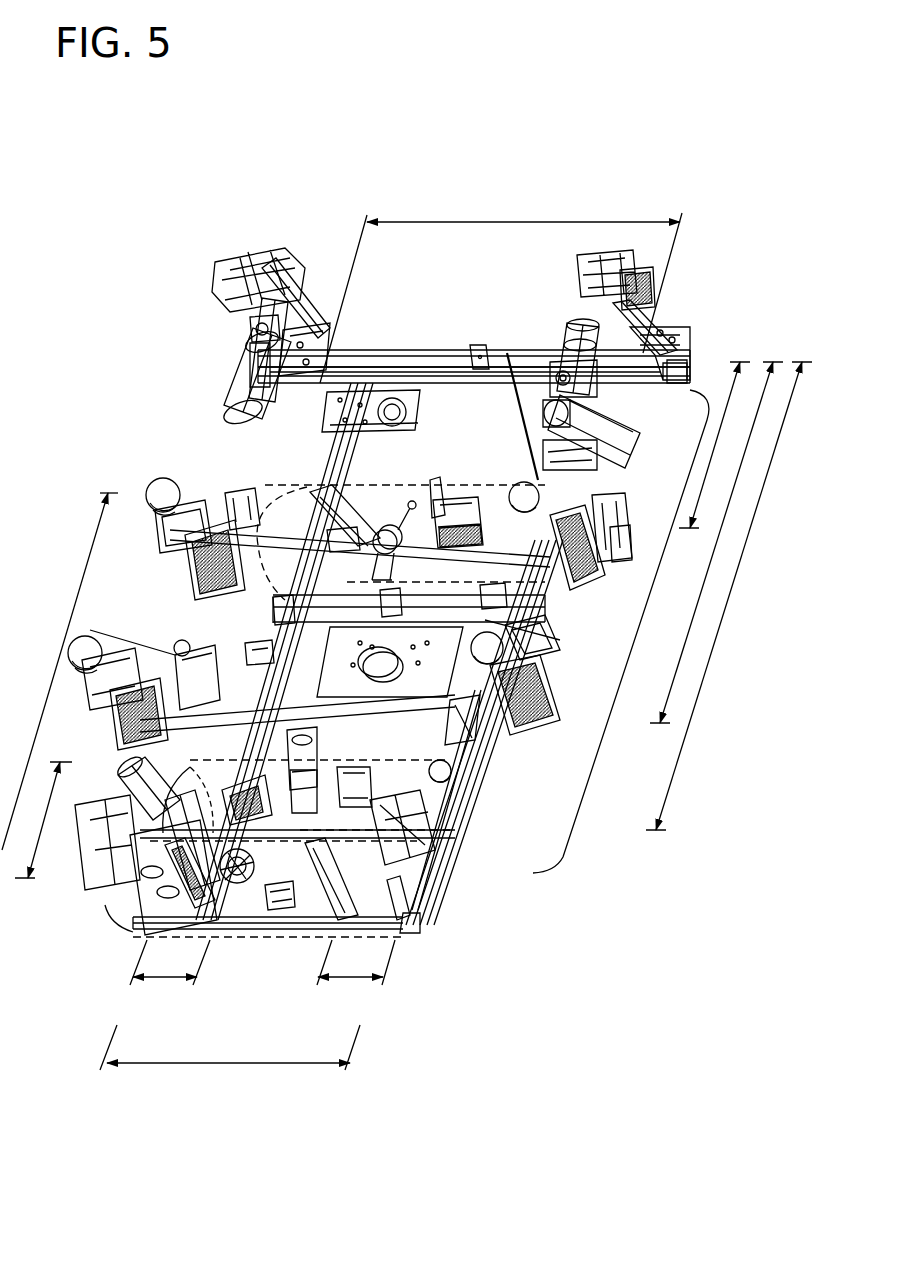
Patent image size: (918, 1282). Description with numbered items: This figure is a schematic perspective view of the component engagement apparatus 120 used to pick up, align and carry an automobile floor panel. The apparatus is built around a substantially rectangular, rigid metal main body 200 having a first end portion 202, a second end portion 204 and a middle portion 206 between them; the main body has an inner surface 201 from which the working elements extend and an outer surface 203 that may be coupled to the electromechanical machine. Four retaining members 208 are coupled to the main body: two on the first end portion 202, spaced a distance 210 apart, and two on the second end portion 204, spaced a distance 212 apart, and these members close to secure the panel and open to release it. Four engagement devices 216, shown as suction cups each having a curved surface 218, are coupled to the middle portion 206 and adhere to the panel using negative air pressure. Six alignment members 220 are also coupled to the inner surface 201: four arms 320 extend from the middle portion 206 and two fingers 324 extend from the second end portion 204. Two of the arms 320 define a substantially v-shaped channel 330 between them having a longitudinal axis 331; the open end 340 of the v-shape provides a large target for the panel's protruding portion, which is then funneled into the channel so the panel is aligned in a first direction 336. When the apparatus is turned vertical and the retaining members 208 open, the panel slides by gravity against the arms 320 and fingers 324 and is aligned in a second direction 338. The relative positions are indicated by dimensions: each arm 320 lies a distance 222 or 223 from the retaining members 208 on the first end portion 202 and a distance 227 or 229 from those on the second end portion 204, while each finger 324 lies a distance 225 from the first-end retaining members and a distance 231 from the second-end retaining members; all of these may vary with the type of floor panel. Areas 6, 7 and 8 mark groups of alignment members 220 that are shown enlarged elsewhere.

The component engagement apparatus 120 is at (115, 238).
The retaining member 208 is at (232, 250).
The distance 210 is at (425, 222).
The main body 200 is at (421, 340).
The first end portion 202 is at (481, 341).
The inner surface 201 is at (387, 352).
The distance 222 is at (735, 360).
The open end 340 is at (433, 437).
The outer surface 203 is at (500, 389).
The channel 330 is at (390, 517).
The longitudinal axis 331 is at (443, 470).
The area 6 is at (463, 477).
The engagement device 216 is at (140, 487).
The curved surface 218 is at (157, 478).
The alignment member 220 is at (300, 480).
The arm 320 is at (336, 470).
The first direction 336 is at (670, 521).
The distance 229 is at (90, 580).
The distance 223 is at (700, 590).
The distance 225 is at (705, 686).
The second direction 338 is at (577, 727).
The middle portion 206 is at (603, 738).
The distance 227 is at (58, 815).
The area 7 is at (467, 827).
The finger 324 is at (255, 872).
The area 8 is at (110, 935).
The second end portion 204 is at (400, 933).
The distance 231 is at (155, 985).
The distance 212 is at (225, 1065).